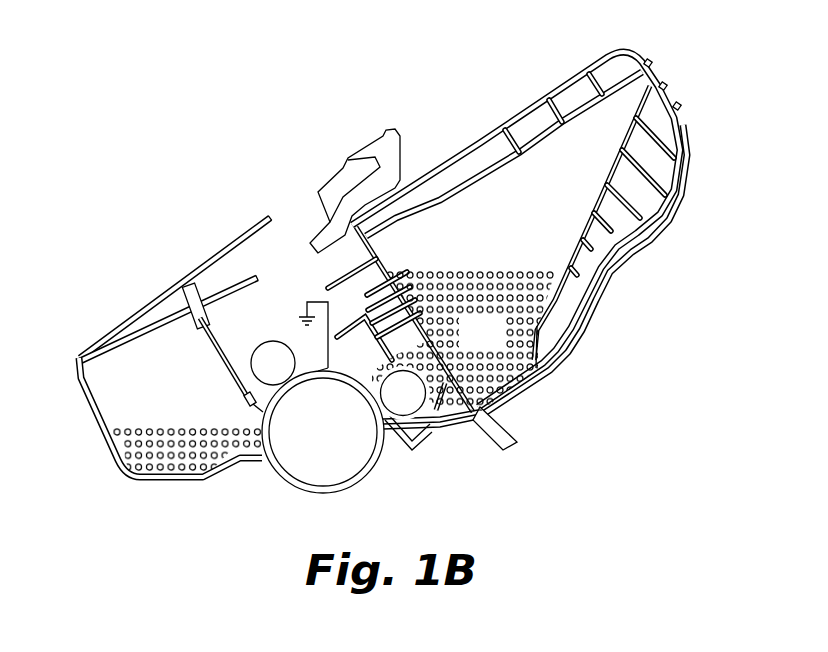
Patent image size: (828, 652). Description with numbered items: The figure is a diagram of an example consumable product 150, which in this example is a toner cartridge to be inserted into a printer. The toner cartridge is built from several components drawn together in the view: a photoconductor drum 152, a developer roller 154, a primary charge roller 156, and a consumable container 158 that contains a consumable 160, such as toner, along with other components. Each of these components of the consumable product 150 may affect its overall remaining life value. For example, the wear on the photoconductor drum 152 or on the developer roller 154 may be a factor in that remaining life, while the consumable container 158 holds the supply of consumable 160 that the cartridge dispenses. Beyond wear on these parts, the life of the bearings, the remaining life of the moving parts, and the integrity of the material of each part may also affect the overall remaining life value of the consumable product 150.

The consumable product 150 is at (103, 146).
The photoconductor drum 152 is at (340, 440).
The developer roller 154 is at (420, 402).
The primary charge roller 156 is at (290, 372).
The consumable container 158 is at (464, 250).
The consumable 160 is at (498, 340).